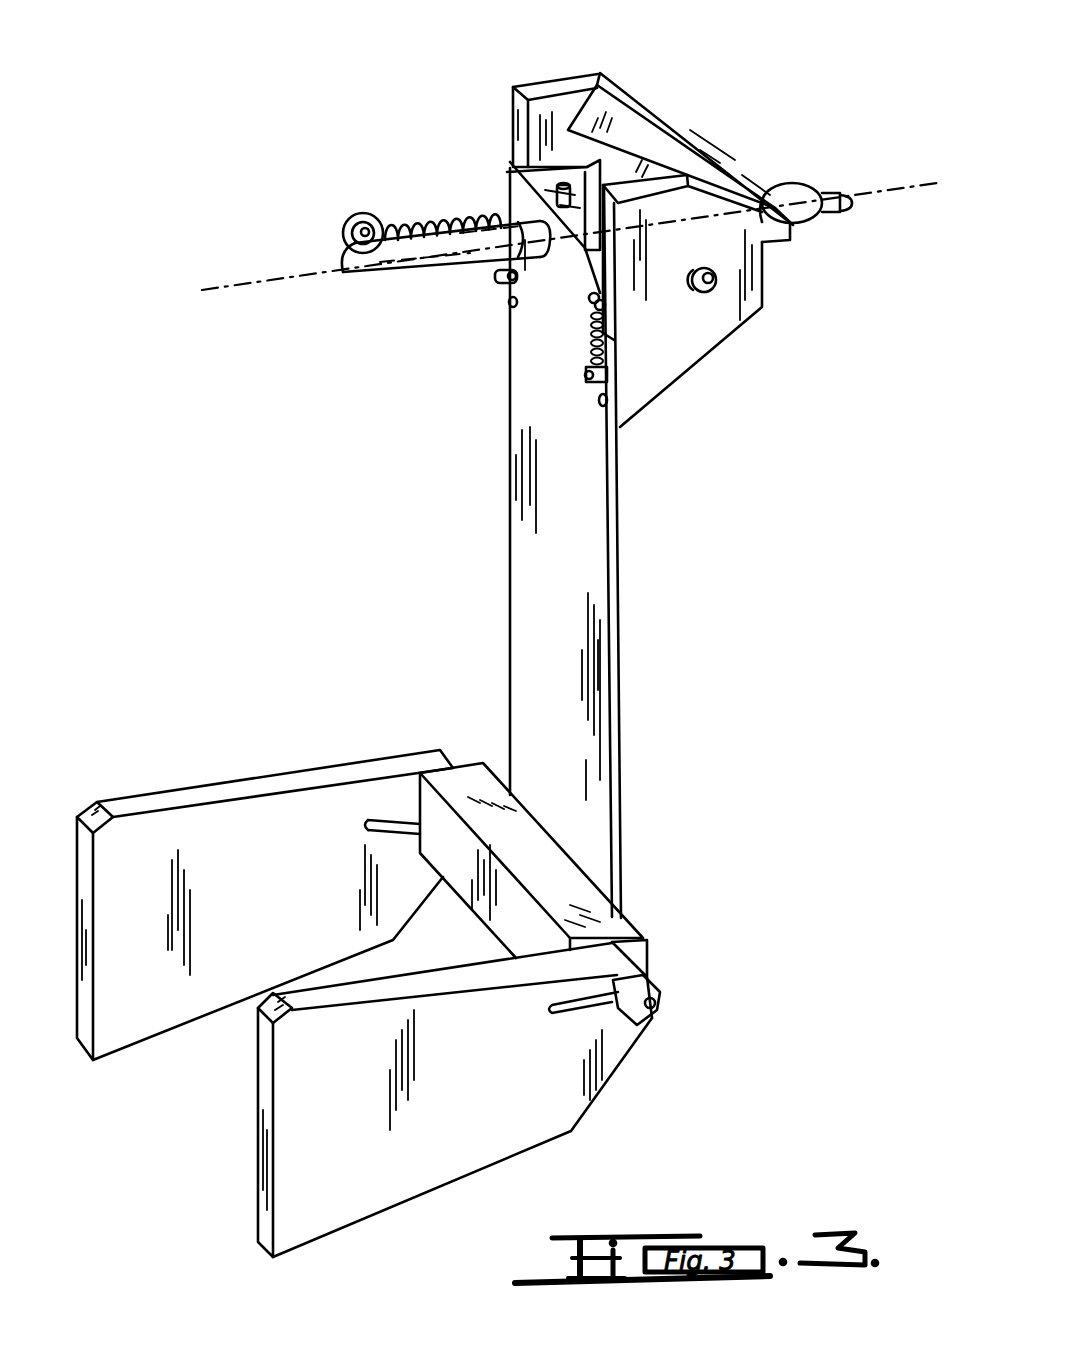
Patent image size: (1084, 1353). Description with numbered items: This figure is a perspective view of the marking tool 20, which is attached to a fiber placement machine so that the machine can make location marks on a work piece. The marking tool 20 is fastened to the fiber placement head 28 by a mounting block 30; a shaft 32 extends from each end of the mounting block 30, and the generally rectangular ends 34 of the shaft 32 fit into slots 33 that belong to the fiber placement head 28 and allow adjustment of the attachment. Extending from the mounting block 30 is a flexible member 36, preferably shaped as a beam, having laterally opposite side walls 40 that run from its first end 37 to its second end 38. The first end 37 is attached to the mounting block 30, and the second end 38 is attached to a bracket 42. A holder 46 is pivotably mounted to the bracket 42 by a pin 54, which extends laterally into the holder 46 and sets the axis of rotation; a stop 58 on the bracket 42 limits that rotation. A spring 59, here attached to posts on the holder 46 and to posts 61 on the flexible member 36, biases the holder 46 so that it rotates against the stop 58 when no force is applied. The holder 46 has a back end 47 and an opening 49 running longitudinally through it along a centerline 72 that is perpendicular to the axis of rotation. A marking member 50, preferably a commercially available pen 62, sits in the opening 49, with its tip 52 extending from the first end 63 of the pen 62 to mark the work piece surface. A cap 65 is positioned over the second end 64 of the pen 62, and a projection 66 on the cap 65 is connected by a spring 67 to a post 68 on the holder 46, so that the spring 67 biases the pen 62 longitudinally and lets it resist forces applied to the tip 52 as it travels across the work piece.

The marking tool 20 is at (348, 134).
The fiber placement head 28 is at (272, 830).
The mounting block 30 is at (581, 860).
The shaft 32 is at (643, 982).
The slots 33 is at (607, 1013).
The ends 34 is at (657, 1007).
The flexible member 36 is at (598, 766).
The first end 37 is at (580, 863).
The second end 38 is at (640, 410).
The side walls 40 is at (620, 705).
The bracket 42 is at (753, 288).
The holder 46 is at (510, 160).
The back end 47 is at (507, 187).
The opening 49 is at (550, 222).
The marking member 50 is at (763, 186).
The tip 52 is at (835, 195).
The pin 54 is at (708, 290).
The stop 58 is at (655, 120).
The spring 59 is at (587, 338).
The posts 61 is at (598, 372).
The pen 62 is at (795, 190).
The first end 63 is at (835, 212).
The second end 64 is at (400, 277).
The cap 65 is at (435, 273).
The projection 66 is at (343, 223).
The spring 67 is at (405, 208).
The post 68 is at (563, 183).
The centerline 72 is at (208, 283).